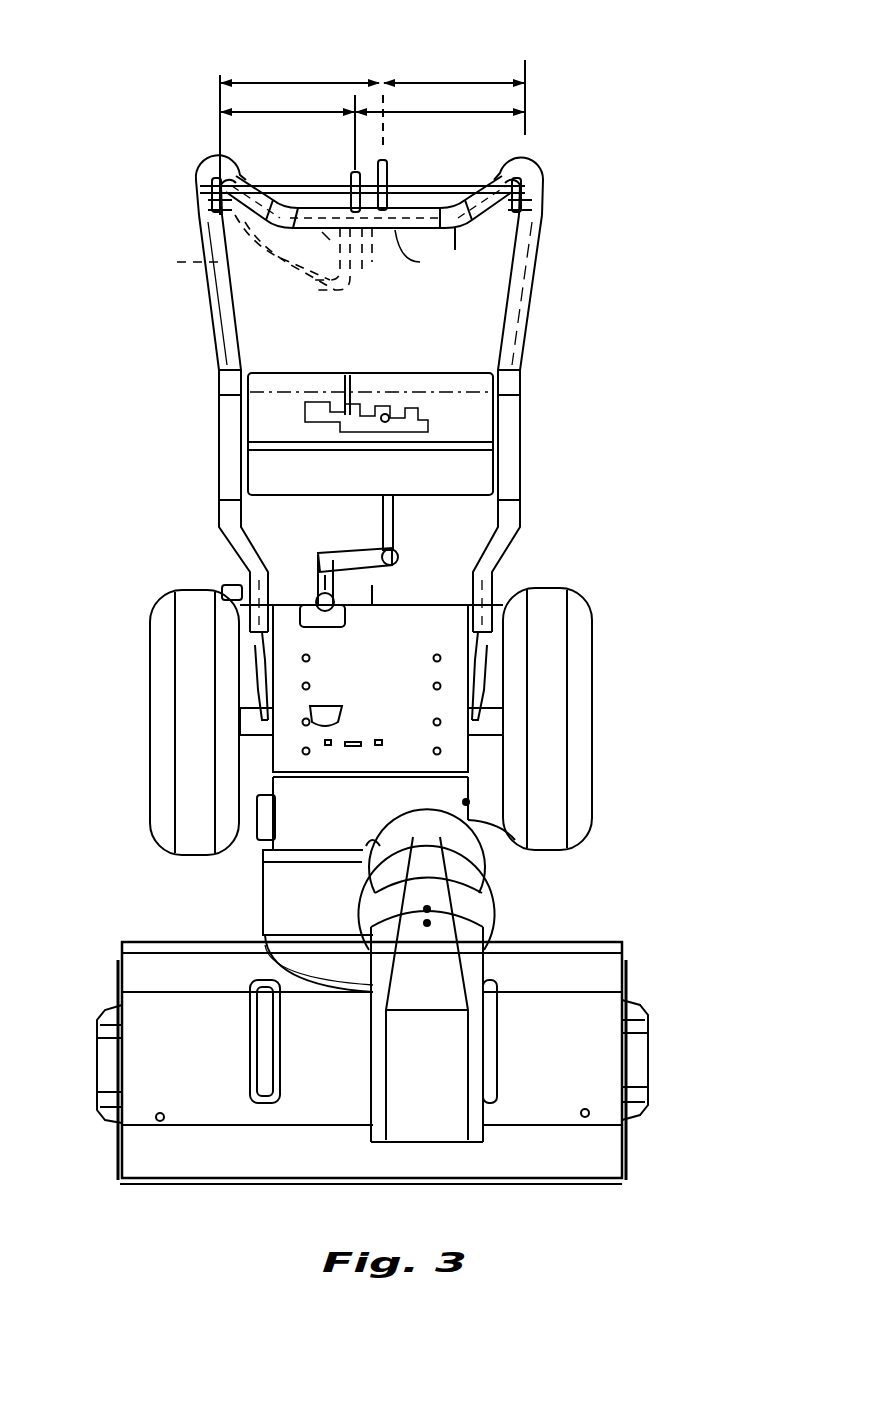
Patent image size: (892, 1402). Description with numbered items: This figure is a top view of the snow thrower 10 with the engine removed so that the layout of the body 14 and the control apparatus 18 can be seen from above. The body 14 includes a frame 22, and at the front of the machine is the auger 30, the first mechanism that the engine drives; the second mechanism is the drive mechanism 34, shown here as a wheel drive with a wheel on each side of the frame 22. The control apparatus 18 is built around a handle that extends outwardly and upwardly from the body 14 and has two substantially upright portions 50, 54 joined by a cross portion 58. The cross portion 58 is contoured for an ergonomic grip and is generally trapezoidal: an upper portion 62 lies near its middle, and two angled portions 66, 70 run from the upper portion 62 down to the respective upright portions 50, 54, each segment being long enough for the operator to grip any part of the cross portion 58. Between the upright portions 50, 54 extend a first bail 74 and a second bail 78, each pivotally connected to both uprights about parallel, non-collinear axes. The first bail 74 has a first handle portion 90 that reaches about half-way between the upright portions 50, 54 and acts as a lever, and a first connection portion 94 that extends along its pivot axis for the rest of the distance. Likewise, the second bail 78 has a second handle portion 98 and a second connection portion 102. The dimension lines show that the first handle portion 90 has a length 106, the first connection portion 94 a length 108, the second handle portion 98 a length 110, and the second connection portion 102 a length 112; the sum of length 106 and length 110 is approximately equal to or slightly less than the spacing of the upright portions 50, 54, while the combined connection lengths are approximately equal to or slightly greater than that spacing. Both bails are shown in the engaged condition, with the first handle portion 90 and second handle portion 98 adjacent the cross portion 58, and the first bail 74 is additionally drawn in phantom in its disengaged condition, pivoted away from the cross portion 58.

The snow thrower 10 is at (652, 505).
The body 14 is at (185, 872).
The control apparatus 18 is at (636, 291).
The frame 22 is at (515, 840).
The auger 30 is at (648, 1043).
The drive mechanism 34 is at (155, 712).
The upright portion 50 is at (213, 297).
The upright portion 54 is at (535, 245).
The cross portion 58 is at (343, 240).
The upper portion 62 is at (370, 250).
The angled portion 66 is at (243, 213).
The angled portion 70 is at (470, 176).
The first bail 74 is at (287, 243).
The second bail 78 is at (450, 238).
The first handle portion 90 is at (327, 237).
The first connection portion 94 is at (522, 217).
The second handle portion 98 is at (413, 240).
The second connection portion 102 is at (325, 185).
The length 106 is at (302, 112).
The length 108 is at (436, 111).
The length 110 is at (477, 83).
The length 112 is at (258, 82).